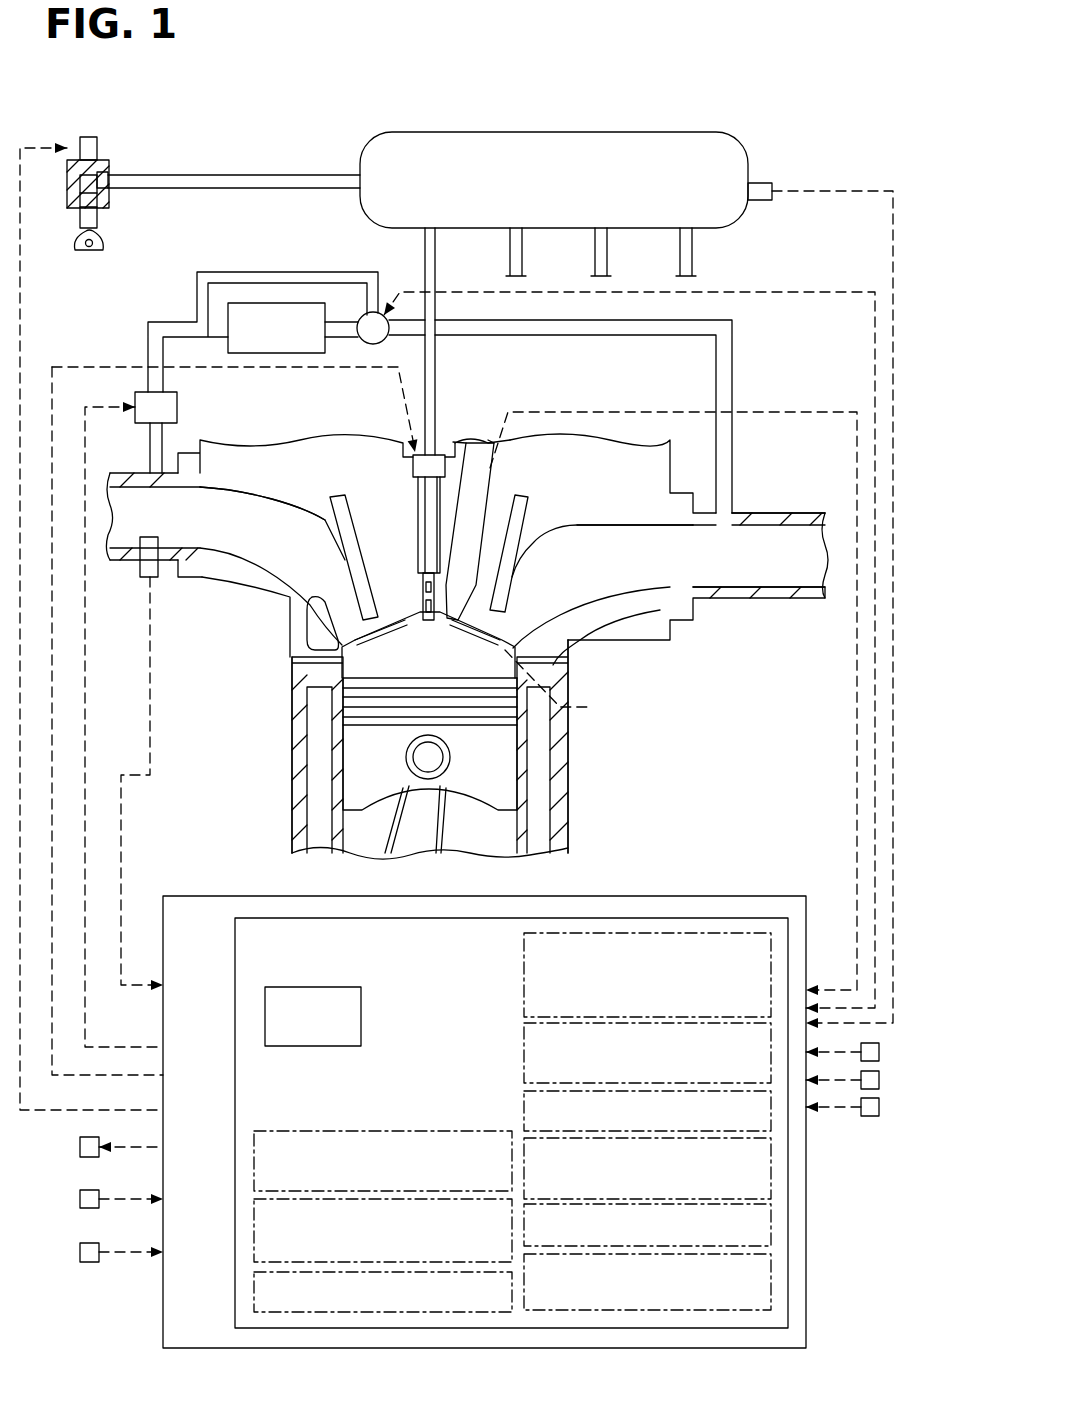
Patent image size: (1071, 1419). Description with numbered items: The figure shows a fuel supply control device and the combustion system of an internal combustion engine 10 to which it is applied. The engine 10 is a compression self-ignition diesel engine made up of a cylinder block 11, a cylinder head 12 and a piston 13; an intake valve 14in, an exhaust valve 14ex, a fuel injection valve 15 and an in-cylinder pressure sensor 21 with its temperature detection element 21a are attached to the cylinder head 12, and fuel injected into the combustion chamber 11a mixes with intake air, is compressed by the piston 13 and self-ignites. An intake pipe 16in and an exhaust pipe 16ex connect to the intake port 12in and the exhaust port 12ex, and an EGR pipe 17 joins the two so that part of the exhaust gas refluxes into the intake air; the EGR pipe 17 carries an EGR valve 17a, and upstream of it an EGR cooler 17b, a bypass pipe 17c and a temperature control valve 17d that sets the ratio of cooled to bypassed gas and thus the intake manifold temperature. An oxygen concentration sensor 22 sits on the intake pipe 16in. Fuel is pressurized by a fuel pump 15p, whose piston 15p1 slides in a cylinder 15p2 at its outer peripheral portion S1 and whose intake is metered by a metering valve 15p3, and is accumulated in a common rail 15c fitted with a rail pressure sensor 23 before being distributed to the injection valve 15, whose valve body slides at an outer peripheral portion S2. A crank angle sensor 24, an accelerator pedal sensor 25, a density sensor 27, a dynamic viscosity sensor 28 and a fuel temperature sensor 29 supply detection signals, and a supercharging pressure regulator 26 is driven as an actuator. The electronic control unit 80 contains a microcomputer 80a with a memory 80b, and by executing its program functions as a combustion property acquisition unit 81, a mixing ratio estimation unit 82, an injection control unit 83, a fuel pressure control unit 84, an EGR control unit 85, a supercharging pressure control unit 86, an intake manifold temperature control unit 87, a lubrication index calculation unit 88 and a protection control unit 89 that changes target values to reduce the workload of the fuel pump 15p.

The internal combustion engine 10 is at (602, 740).
The cylinder block 11 is at (292, 725).
The combustion chamber 11a is at (372, 668).
The cylinder head 12 is at (215, 570).
The intake port 12in is at (287, 540).
The exhaust port 12ex is at (605, 575).
The piston 13 is at (370, 762).
The intake valve 14in is at (322, 495).
The exhaust valve 14ex is at (590, 520).
The fuel injection valve 15 is at (414, 510).
The common rail 15c is at (360, 196).
The fuel pump 15p is at (112, 160).
The piston 15p1 is at (100, 228).
The cylinder 15p2 is at (108, 196).
The metering valve 15p3 is at (89, 137).
The intake pipe 16in is at (112, 562).
The exhaust pipe 16ex is at (790, 600).
The EGR pipe 17 is at (732, 358).
The EGR valve 17a is at (177, 407).
The EGR cooler 17b is at (240, 303).
The bypass pipe 17c is at (197, 296).
The temperature control valve 17d is at (360, 315).
The in-cylinder pressure sensor 21 is at (463, 475).
The temperature detection element 21a is at (486, 441).
The oxygen concentration sensor 22 is at (162, 577).
The rail pressure sensor 23 is at (762, 200).
The crank angle sensor 24 is at (80, 1199).
The accelerator pedal sensor 25 is at (80, 1252).
The supercharging pressure regulator 26 is at (80, 1147).
The density sensor 27 is at (879, 1052).
The dynamic viscosity sensor 28 is at (879, 1080).
The fuel temperature sensor 29 is at (879, 1107).
The electronic control unit 80 is at (185, 896).
The microcomputer 80a is at (262, 918).
The memory 80b is at (265, 1010).
The combustion property acquisition unit 81 is at (522, 972).
The mixing ratio estimation unit 82 is at (522, 1044).
The injection control unit 83 is at (522, 1106).
The fuel pressure control unit 84 is at (773, 1166).
The EGR control unit 85 is at (773, 1226).
The supercharging pressure control unit 86 is at (254, 1168).
The intake manifold temperature control unit 87 is at (254, 1236).
The lubrication index calculation unit 88 is at (773, 1282).
The protection control unit 89 is at (254, 1290).
The outer peripheral portion of the pump piston S1 is at (70, 208).
The outer peripheral portion of the valve body S2 is at (562, 688).